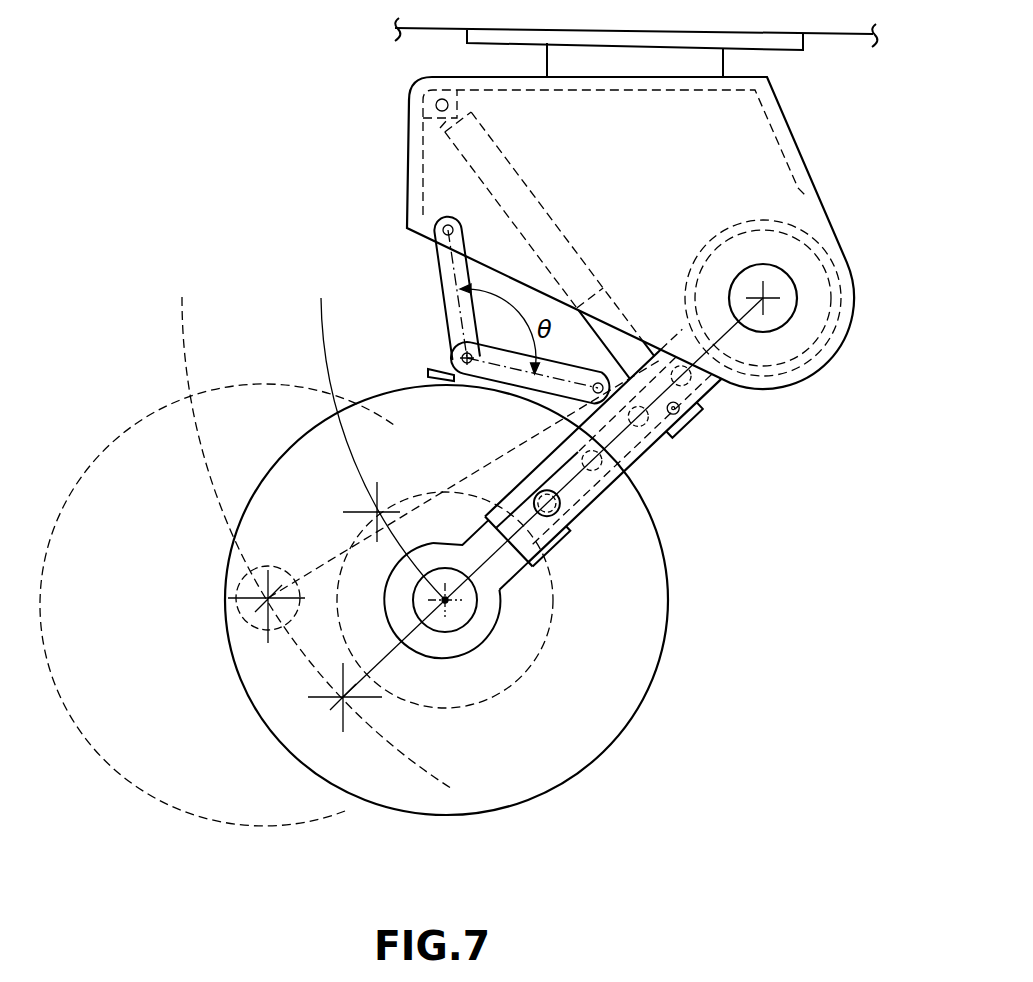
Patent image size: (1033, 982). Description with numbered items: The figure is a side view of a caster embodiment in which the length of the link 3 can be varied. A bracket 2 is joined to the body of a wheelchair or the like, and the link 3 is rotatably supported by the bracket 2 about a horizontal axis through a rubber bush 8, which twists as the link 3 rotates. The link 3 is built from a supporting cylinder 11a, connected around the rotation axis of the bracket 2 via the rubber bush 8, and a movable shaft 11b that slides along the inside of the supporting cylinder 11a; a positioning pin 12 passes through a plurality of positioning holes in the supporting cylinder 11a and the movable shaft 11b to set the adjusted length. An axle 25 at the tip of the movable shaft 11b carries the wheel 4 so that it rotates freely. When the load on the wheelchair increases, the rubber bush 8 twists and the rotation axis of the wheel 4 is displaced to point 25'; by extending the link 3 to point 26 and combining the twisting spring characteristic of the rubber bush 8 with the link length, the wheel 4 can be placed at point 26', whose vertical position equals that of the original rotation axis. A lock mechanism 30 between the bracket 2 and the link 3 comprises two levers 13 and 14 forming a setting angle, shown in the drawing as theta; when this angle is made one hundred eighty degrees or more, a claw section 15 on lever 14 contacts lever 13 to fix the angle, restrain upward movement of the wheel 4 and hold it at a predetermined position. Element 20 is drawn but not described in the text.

The bracket 2 is at (410, 166).
The link 3 is at (660, 445).
The wheel 4 is at (642, 690).
The rubber bush 8 is at (806, 372).
The supporting cylinder 11a is at (690, 407).
The movable shaft 11b is at (500, 569).
The positioning pin 12 is at (560, 512).
The lever 13 is at (452, 316).
The lever 14 is at (507, 380).
The claw section 15 is at (437, 373).
The actuator cylinder 20 is at (517, 226).
The axle 25 is at (506, 725).
The point 25' is at (346, 501).
The point 26 is at (345, 762).
The point 26' is at (241, 638).
The lock mechanism 30 is at (401, 301).